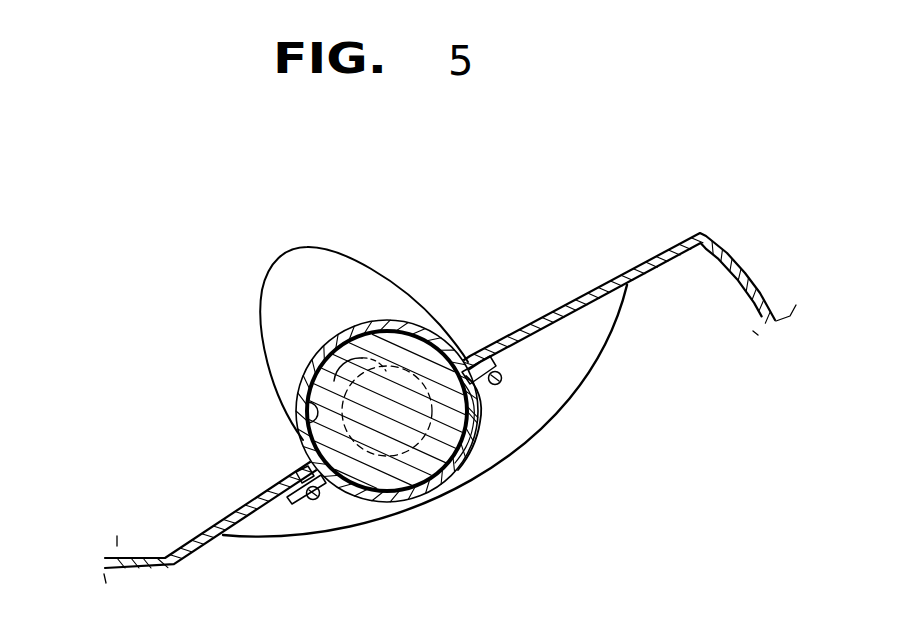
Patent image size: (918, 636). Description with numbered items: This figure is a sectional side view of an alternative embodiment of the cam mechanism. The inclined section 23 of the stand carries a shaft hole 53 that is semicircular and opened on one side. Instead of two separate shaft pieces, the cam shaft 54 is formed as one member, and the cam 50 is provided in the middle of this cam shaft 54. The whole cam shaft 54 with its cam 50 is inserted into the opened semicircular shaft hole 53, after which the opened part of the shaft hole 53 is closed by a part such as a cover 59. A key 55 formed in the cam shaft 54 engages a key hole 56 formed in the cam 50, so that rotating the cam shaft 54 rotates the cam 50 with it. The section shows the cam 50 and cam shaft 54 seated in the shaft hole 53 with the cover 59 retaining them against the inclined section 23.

The inclined section 23 is at (590, 291).
The cam 50 is at (297, 267).
The shaft hole 53 is at (303, 432).
The cam shaft 54 is at (420, 350).
The key 55 is at (368, 360).
The key hole 56 is at (348, 381).
The cover 59 is at (423, 497).